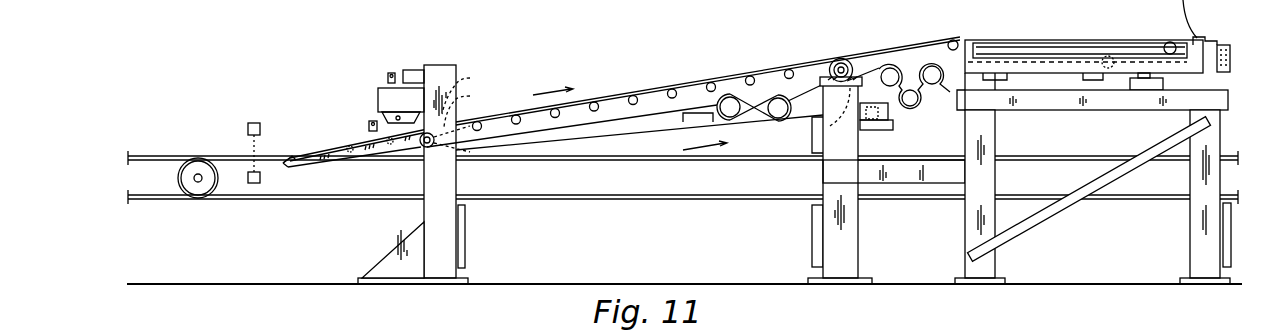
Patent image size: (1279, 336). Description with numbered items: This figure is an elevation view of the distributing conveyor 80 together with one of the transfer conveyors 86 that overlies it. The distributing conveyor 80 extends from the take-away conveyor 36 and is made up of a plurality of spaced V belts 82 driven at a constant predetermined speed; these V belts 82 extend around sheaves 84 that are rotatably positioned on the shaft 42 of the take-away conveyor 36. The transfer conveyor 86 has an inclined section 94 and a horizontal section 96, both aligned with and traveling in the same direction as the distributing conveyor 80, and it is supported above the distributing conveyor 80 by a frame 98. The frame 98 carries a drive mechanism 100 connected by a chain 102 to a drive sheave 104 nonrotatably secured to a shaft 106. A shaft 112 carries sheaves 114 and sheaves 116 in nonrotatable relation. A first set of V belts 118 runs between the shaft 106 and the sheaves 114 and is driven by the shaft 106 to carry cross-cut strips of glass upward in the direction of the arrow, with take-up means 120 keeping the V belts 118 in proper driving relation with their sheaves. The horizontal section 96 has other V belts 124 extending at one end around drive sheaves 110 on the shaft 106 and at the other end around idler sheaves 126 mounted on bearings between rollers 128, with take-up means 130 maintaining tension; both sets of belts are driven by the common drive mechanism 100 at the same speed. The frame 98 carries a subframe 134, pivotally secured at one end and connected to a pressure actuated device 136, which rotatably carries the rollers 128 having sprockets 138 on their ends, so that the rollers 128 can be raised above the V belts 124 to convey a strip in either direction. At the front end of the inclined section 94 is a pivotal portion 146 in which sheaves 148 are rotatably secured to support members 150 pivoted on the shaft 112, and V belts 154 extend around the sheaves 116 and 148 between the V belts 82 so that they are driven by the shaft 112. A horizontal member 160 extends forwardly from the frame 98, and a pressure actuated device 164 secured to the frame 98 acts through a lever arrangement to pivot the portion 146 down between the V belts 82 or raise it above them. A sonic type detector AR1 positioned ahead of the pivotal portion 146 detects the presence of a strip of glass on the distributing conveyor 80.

The take-away conveyor 36 is at (161, 156).
The shaft 42 is at (197, 183).
The sheaves 84 is at (211, 184).
The sonic type detector AR1 is at (254, 122).
The pivotal portion 146 is at (348, 144).
The sheaves 148 is at (285, 161).
The support members 150 is at (320, 160).
The V belts 154 is at (357, 160).
The pressure actuated device 164 is at (418, 64).
The frame 98 is at (452, 225).
The horizontal member 160 is at (379, 96).
The shaft 112 is at (421, 146).
The sheaves 116 is at (475, 91).
The sheaves 114 is at (476, 106).
The transfer conveyor 86 is at (692, 73).
The V-belts 118 is at (763, 68).
The V belts 82 is at (584, 197).
The take-up means 120 is at (781, 119).
The chain 102 is at (886, 180).
The drive sheave 104 is at (832, 62).
The inclined section 94 is at (864, 50).
The shaft 106 is at (837, 58).
The V-belt sheaves 110 is at (872, 64).
The drive mechanism 100 is at (897, 112).
The take-up means 130 is at (912, 104).
The distributing conveyor 80 is at (751, 218).
The horizontal section 96 is at (963, 40).
The V belts 124 is at (1056, 42).
The rollers 128 is at (1024, 50).
The sheaves 126 is at (1168, 41).
The sprockets 138 is at (1224, 45).
The subframe 134 is at (998, 83).
The pressure actuated device 136 is at (1145, 91).